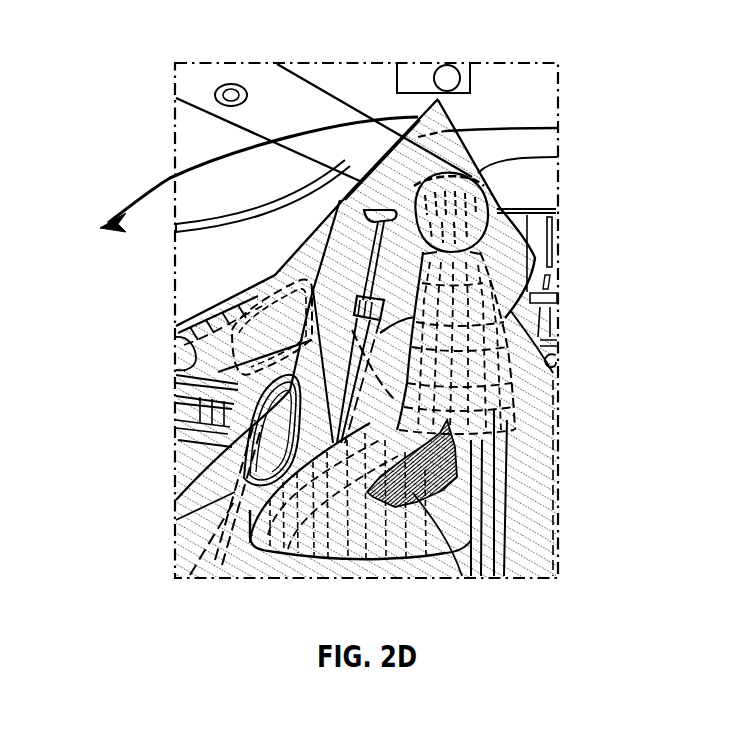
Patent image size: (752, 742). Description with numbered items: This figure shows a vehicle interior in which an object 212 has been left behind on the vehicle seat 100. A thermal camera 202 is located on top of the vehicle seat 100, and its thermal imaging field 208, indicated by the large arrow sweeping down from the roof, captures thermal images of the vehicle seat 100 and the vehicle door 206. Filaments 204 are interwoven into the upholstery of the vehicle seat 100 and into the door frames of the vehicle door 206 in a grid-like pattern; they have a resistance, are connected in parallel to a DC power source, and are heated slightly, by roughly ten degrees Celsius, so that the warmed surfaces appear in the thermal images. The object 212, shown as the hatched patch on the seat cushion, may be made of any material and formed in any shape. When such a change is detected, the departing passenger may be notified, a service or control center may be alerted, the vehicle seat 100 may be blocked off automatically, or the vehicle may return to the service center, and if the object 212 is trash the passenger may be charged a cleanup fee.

The vehicle seat 100 is at (517, 253).
The thermal camera 202 is at (449, 78).
The filaments 204 is at (188, 333).
The vehicle door 206 is at (197, 306).
The thermal imaging field 208 is at (237, 198).
The object 212 is at (440, 453).